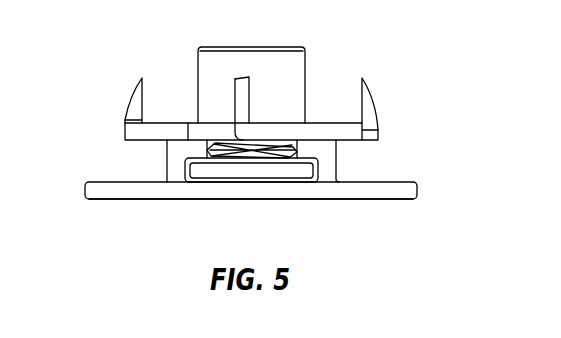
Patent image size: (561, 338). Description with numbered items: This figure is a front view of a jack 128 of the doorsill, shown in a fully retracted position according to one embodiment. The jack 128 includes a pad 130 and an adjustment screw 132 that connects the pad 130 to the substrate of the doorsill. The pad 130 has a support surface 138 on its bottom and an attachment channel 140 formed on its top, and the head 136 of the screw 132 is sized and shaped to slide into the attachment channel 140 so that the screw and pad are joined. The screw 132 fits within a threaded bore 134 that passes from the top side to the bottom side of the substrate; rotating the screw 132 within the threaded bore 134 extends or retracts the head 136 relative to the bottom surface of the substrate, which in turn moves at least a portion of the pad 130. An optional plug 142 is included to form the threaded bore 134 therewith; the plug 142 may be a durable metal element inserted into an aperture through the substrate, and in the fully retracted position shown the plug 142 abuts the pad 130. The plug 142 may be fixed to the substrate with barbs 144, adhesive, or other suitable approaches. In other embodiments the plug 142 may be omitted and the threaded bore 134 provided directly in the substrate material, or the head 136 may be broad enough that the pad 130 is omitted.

The jack 128 is at (150, 229).
The pad 130 is at (410, 190).
The adjustment screw 132 is at (293, 155).
The threaded bore 134 is at (212, 33).
The head 136 is at (283, 170).
The support surface 138 is at (115, 200).
The attachment channel 140 is at (174, 163).
The plug 142 is at (217, 77).
The barbs 144 is at (367, 107).